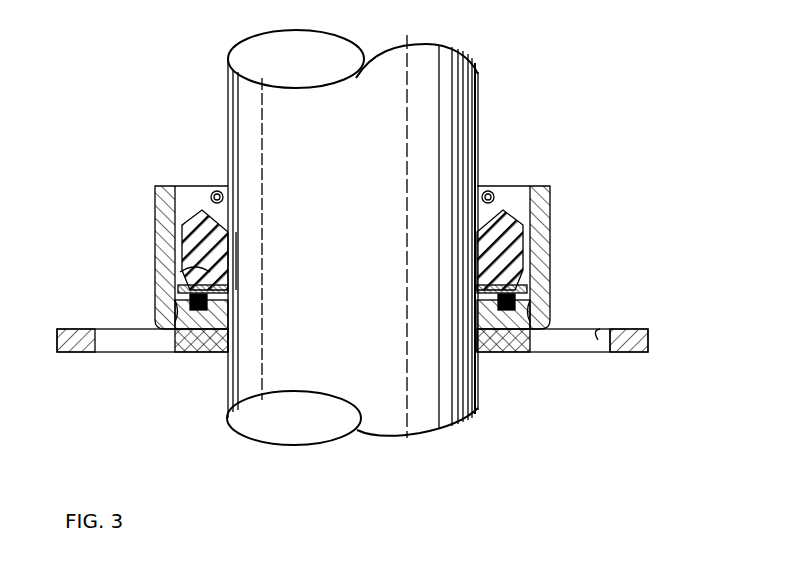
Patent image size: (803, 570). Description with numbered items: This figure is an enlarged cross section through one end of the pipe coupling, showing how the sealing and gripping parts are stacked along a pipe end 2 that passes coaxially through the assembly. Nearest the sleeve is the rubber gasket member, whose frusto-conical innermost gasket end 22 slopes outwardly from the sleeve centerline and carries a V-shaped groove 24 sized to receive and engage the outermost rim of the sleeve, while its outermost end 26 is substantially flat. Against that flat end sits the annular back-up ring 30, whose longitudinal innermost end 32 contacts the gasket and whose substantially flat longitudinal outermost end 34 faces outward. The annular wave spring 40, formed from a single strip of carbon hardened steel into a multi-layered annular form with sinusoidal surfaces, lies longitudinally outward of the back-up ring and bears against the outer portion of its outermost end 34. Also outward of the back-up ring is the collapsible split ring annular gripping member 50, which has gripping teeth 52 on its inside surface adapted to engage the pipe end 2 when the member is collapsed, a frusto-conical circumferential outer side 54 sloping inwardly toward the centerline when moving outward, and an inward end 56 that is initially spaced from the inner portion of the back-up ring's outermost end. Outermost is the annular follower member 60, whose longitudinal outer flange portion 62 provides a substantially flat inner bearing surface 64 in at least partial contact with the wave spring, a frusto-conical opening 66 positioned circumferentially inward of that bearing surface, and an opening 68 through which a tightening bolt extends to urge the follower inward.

The pipe end 2 is at (247, 110).
The longitudinally innermost gasket end 22 is at (200, 205).
The V-shaped groove 24 is at (190, 215).
The longitudinally outermost end 26 is at (180, 272).
The annular back-up ring 30 is at (228, 288).
The longitudinal innermost end 32 is at (228, 262).
The longitudinal outermost end 34 is at (170, 313).
The annular wave spring 40 is at (172, 335).
The collapsible split ring annular gripping member 50 is at (476, 337).
The gripping teeth 52 is at (476, 303).
The frusto-conical circumferential outer side 54 is at (192, 355).
The inward end 56 is at (476, 290).
The annular follower member 60 is at (622, 352).
The longitudinal outer flange portion 62 is at (644, 340).
The inner bearing surface 64 is at (530, 352).
The frusto-conical opening 66 is at (224, 352).
The opening 68 is at (595, 338).